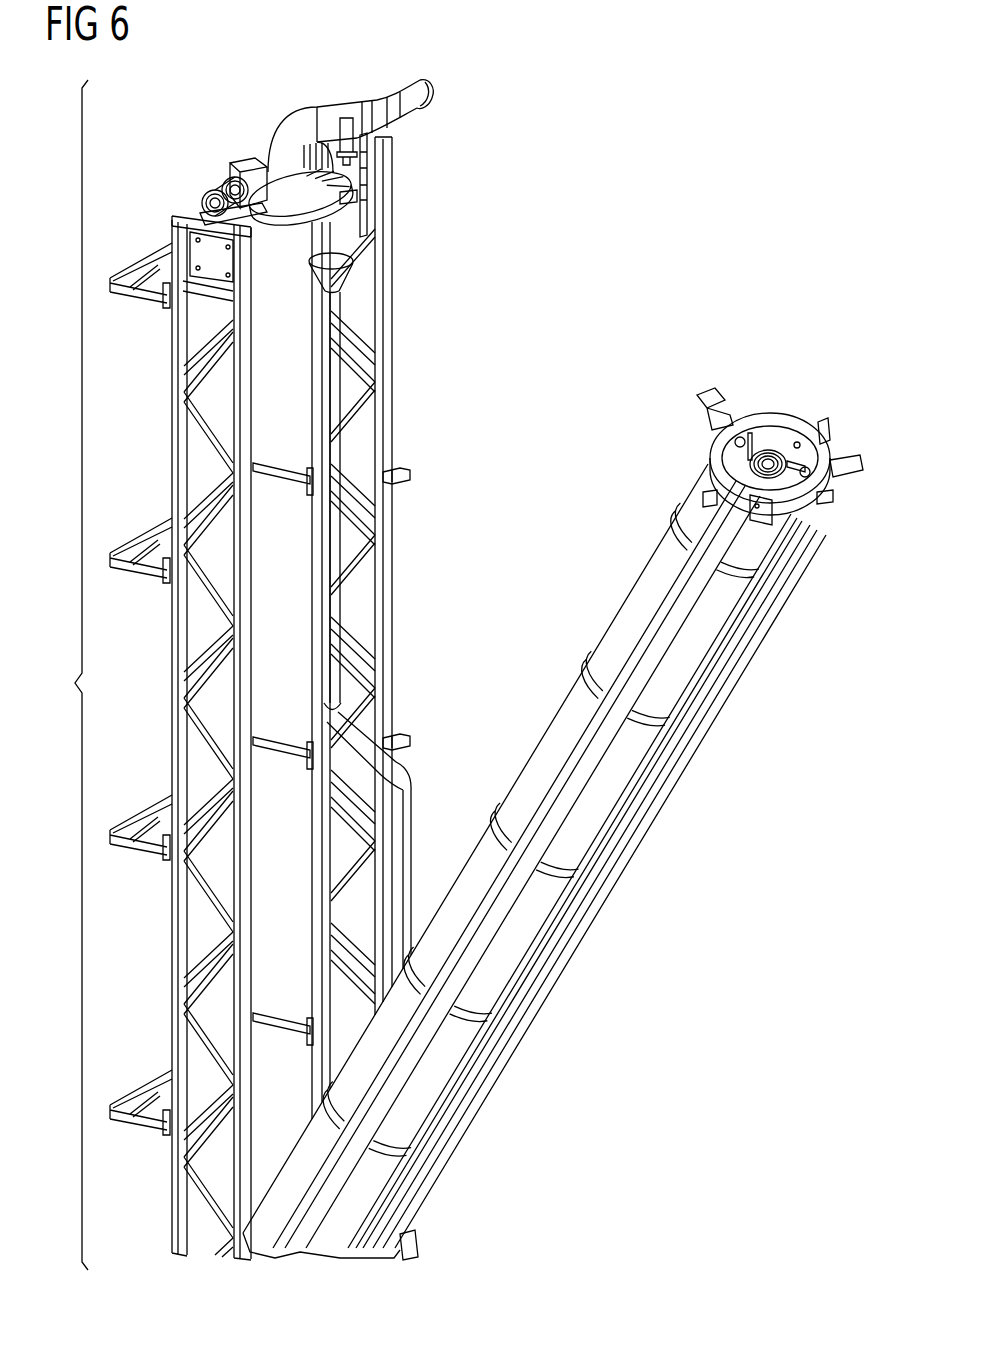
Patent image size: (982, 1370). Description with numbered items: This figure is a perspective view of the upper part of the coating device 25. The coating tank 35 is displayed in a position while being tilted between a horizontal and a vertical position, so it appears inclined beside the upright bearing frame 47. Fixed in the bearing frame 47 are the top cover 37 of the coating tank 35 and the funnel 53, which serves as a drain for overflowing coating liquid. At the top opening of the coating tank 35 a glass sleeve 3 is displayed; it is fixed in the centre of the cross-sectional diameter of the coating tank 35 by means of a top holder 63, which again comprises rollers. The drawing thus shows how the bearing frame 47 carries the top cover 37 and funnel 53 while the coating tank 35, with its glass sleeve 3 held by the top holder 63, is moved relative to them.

The coating device 25 is at (66, 675).
The top cover 37 is at (282, 173).
The funnel 53 is at (314, 259).
The top holder 63 is at (752, 430).
The glass sleeve 3 is at (772, 448).
The coating tank 35 is at (618, 787).
The bearing frame 47 is at (172, 983).